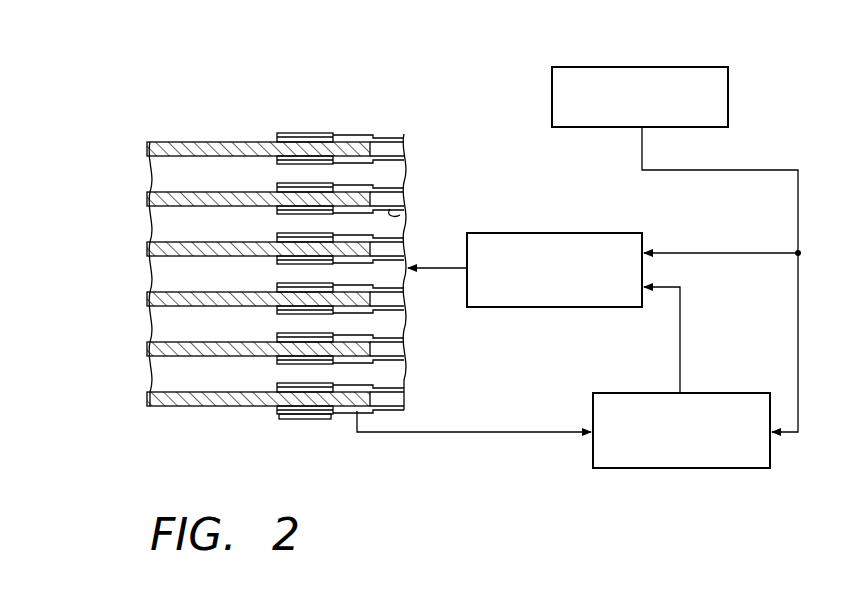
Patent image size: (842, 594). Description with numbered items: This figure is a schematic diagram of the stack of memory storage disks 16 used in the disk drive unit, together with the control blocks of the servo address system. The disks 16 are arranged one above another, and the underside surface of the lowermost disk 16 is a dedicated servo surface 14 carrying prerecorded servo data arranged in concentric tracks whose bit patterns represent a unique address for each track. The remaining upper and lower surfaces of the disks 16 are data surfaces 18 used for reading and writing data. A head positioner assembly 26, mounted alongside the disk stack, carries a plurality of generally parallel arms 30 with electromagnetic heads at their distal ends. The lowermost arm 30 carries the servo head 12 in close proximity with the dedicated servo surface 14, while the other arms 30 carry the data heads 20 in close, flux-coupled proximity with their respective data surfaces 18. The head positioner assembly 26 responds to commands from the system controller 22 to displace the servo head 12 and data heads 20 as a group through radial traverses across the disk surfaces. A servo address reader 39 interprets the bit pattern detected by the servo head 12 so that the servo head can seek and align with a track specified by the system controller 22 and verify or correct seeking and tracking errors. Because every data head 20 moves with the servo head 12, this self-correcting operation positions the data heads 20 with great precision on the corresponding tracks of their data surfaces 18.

The servo head 12 is at (298, 419).
The dedicated servo surface 14 is at (207, 407).
The memory storage disks 16 is at (148, 400).
The data surfaces 18 is at (150, 207).
The data heads 20 is at (292, 133).
The system controller 22 is at (667, 67).
The head positioner assembly 26 is at (577, 233).
The arms 30 is at (389, 138).
The servo address reader 39 is at (666, 468).